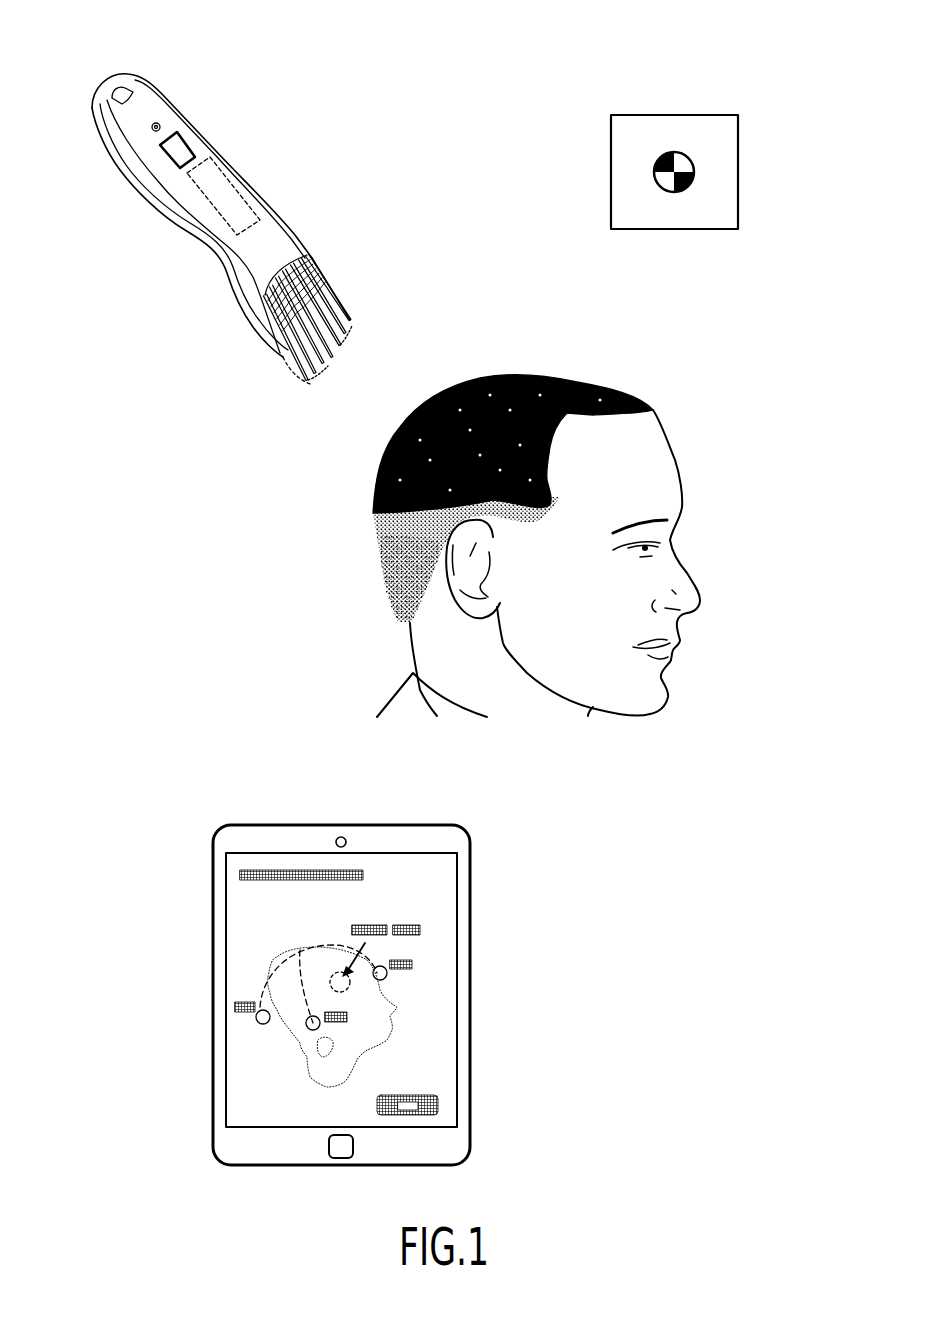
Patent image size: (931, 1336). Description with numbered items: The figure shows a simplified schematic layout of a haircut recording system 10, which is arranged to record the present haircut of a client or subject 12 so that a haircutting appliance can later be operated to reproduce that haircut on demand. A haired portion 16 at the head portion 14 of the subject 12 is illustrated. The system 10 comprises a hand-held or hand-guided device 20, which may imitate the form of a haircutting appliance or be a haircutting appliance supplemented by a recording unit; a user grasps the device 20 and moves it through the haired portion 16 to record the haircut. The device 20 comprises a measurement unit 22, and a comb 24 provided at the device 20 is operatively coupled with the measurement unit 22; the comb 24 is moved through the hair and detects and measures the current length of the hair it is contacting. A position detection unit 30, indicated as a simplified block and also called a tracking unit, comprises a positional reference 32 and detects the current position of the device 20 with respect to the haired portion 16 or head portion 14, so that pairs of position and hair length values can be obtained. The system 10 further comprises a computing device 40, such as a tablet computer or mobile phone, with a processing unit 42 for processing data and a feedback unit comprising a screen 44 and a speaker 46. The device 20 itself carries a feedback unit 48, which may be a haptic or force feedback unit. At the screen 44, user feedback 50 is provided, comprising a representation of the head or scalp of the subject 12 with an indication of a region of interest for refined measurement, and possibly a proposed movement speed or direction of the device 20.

The haircut recording system 10 is at (548, 70).
The subject 12 is at (380, 588).
The head portion 14 is at (515, 513).
The haired portion 16 is at (493, 375).
The device 20 is at (150, 208).
The measurement unit 22 is at (273, 250).
The comb 24 is at (345, 315).
The position detection unit 30 is at (710, 106).
The positional reference 32 is at (697, 173).
The computing device 40 is at (355, 961).
The processing unit 42 is at (445, 1143).
The screen 44 is at (240, 1082).
The speaker 46 is at (341, 836).
The feedback unit 48 is at (178, 150).
The user feedback 50 is at (310, 978).